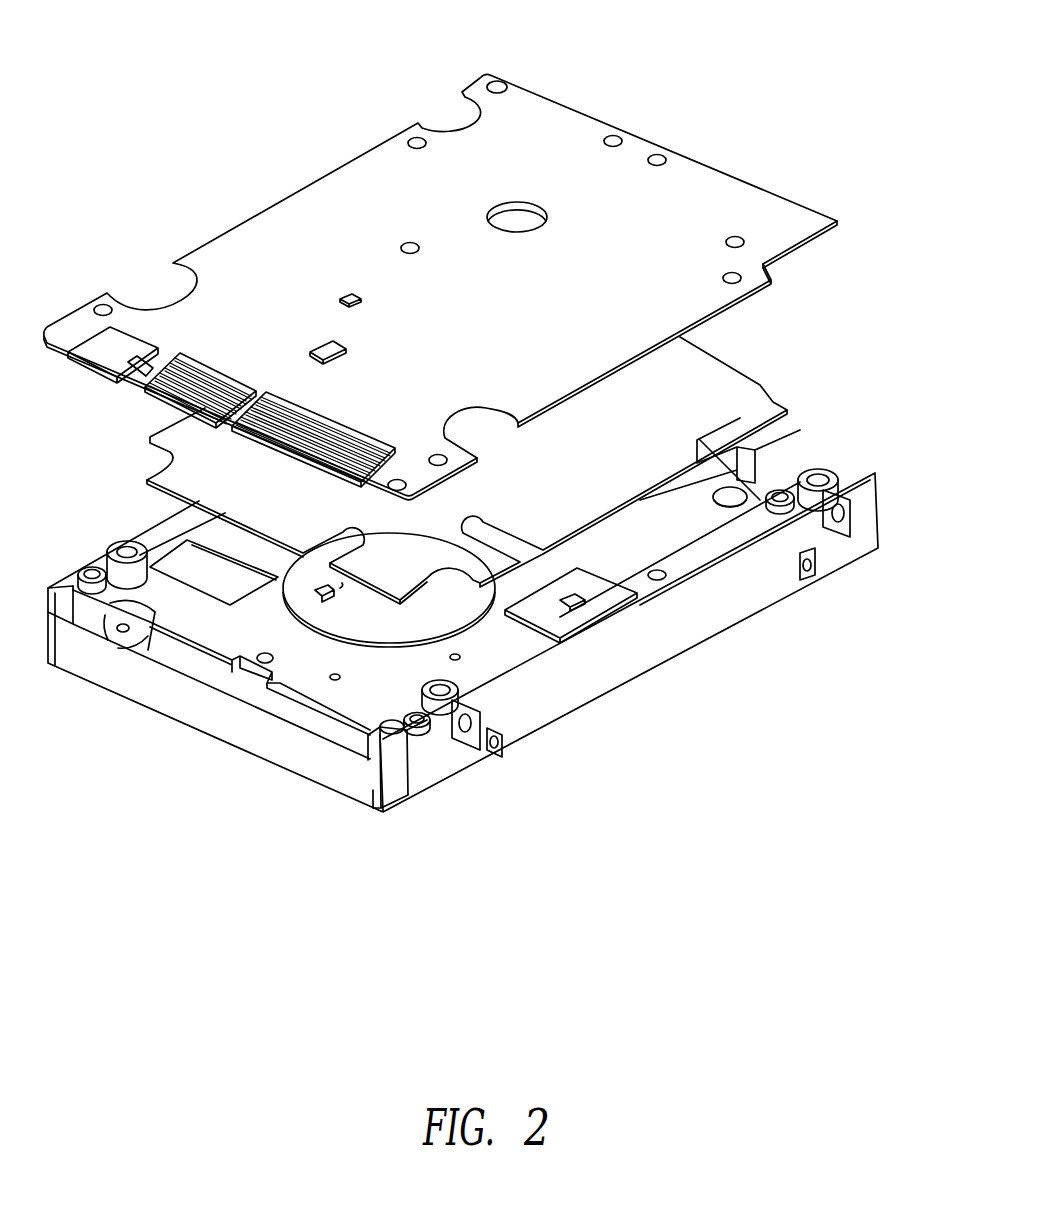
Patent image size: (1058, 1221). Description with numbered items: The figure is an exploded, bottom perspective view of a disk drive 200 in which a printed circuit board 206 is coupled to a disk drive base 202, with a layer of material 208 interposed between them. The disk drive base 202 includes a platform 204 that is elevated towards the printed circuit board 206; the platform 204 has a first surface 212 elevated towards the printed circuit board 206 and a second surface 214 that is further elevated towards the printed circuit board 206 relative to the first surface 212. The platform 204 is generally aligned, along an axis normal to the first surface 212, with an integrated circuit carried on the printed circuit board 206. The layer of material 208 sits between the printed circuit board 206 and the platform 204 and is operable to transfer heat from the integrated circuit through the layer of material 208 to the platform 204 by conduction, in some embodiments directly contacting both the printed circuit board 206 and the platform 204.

The disk drive 200 is at (656, 48).
The disk drive base 202 is at (854, 446).
The platform 204 is at (606, 601).
The printed circuit board 206 is at (814, 196).
The layer of material 208 is at (752, 364).
The first surface 212 is at (577, 637).
The second surface 214 is at (585, 607).